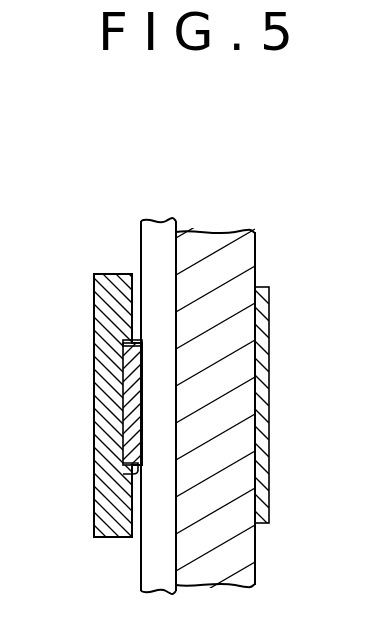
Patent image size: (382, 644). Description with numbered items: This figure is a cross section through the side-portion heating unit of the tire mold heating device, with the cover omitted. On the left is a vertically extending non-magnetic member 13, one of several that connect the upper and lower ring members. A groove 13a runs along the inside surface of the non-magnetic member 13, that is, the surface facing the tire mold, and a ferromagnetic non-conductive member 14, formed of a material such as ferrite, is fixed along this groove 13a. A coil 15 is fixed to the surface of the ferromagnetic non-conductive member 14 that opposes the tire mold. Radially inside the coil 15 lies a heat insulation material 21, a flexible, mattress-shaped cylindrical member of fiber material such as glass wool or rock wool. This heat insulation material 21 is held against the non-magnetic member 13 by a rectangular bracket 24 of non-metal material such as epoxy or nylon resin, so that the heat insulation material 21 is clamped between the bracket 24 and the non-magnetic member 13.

The non-magnetic member 13 is at (94, 405).
The groove 13a is at (124, 368).
The ferromagnetic non-conductive member 14 is at (136, 473).
The coil 15 is at (141, 247).
The heat insulation material 21 is at (255, 257).
The bracket 24 is at (269, 393).